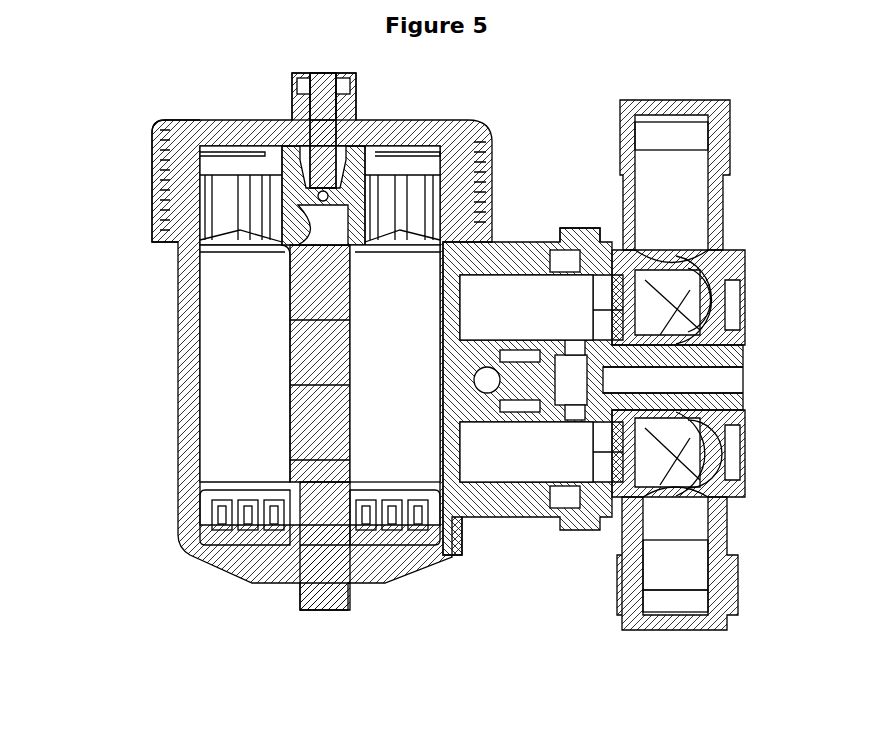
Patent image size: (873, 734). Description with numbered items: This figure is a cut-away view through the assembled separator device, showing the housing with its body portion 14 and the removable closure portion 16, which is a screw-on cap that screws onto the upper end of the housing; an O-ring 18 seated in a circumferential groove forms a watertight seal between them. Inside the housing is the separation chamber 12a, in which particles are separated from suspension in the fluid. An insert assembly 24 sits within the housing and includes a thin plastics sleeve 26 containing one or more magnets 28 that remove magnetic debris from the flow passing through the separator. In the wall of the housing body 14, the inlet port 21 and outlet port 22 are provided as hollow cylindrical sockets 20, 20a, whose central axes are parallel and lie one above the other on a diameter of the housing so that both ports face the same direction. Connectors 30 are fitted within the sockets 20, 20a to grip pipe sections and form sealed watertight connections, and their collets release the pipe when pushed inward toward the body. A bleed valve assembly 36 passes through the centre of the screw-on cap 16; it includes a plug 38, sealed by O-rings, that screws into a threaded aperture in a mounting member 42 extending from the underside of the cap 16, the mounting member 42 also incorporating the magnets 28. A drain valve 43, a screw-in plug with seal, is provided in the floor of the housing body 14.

The separation chamber 12a is at (226, 340).
The body portion 14 is at (178, 420).
The closure portion 16 is at (158, 155).
The O-ring 18 is at (192, 132).
The socket 20 is at (521, 297).
The first hollow cylindrical socket 20a is at (521, 455).
The inlet port 21 is at (492, 240).
The outlet port 22 is at (490, 518).
The insert assembly 24 is at (242, 513).
The plastics sleeve 26 is at (289, 320).
The magnets 28 is at (336, 345).
The connectors 30 is at (700, 367).
The bleed valve assembly 36 is at (360, 100).
The plug 38 is at (302, 98).
The mounting member 42 is at (306, 151).
The drain valve 43 is at (328, 586).